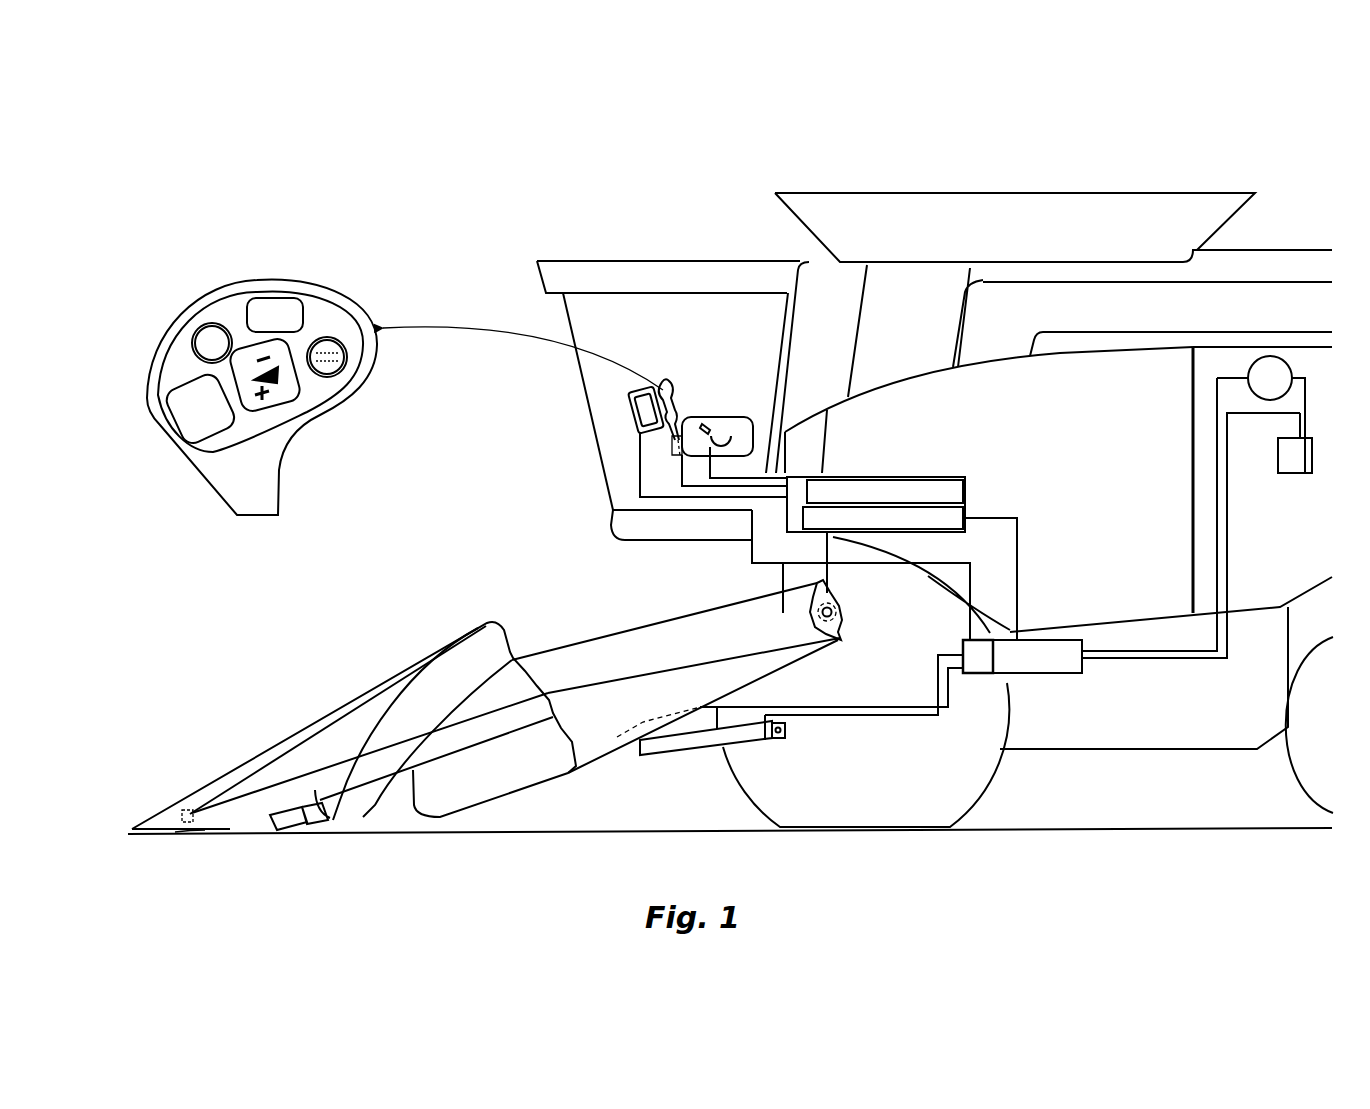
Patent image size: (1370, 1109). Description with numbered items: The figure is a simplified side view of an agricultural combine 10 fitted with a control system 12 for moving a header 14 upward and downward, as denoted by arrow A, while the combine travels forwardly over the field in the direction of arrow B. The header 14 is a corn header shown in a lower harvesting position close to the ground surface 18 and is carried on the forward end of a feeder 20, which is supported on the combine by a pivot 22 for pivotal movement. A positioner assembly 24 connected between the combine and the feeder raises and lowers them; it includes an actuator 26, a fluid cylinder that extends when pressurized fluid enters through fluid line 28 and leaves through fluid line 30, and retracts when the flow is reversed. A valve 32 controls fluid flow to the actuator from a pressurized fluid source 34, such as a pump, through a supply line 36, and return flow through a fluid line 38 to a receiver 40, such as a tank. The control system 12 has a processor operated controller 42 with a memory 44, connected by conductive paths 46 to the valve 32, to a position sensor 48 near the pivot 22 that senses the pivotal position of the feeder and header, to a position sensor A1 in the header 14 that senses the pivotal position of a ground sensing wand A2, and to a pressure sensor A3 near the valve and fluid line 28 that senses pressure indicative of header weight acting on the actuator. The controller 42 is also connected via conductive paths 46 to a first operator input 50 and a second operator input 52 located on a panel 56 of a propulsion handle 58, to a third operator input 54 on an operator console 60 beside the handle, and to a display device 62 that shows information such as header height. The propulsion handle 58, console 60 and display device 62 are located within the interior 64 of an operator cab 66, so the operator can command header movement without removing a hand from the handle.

The agricultural combine 10 is at (1232, 186).
The control system 12 is at (1018, 464).
The header 14 is at (352, 700).
The ground surface 18 is at (604, 831).
The feeder 20 is at (626, 632).
The pivot 22 is at (846, 613).
The positioner assembly 24 is at (760, 745).
The actuator 26 is at (702, 750).
The fluid line 28 is at (917, 715).
The fluid line 30 is at (835, 706).
The valve 32 is at (1070, 675).
The pressurized fluid source 34 is at (1294, 370).
The hydraulic line 36 is at (1212, 567).
The fluid line 38 is at (1228, 553).
The receiver 40 is at (1297, 473).
The controller 42 is at (965, 530).
The memory 44 is at (902, 476).
The conductive path 46 is at (740, 432).
The position sensor 48 is at (812, 632).
The first operator input 50 is at (283, 398).
The second operator input 52 is at (343, 378).
The third operator input 54 is at (708, 420).
The panel 56 is at (312, 306).
The propulsion handle 58 is at (663, 382).
The operator console 60 is at (752, 420).
The display device 62 is at (625, 400).
The interior 64 is at (700, 298).
The operator cab 66 is at (592, 259).
The arrow A is at (562, 640).
The position sensor A1 is at (185, 809).
The ground sensing wand A2 is at (190, 834).
The pressure sensor A3 is at (983, 674).
The arrow B is at (1085, 792).